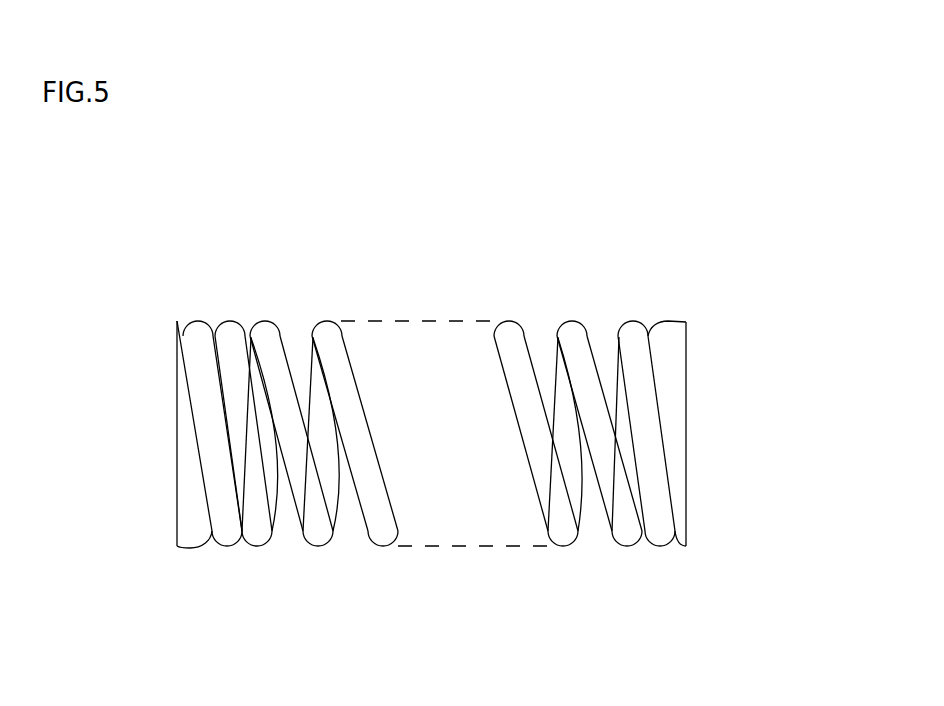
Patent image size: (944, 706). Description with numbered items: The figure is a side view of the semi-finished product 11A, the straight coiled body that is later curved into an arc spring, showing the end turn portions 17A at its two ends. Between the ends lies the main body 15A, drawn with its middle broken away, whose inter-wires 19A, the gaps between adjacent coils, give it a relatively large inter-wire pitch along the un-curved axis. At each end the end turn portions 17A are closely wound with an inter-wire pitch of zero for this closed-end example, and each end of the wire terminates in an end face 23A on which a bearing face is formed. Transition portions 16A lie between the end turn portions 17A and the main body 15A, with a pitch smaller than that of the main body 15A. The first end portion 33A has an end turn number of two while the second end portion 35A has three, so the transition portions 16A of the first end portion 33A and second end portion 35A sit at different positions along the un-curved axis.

The semi-finished product 11A is at (517, 223).
The main body 15A is at (363, 317).
The transition portion 16A is at (268, 322).
The end turn portion 17A is at (197, 317).
The inter-wire 19A is at (248, 325).
The end face 23A is at (177, 433).
The first end portion 33A is at (684, 546).
The second end portion 35A is at (177, 546).